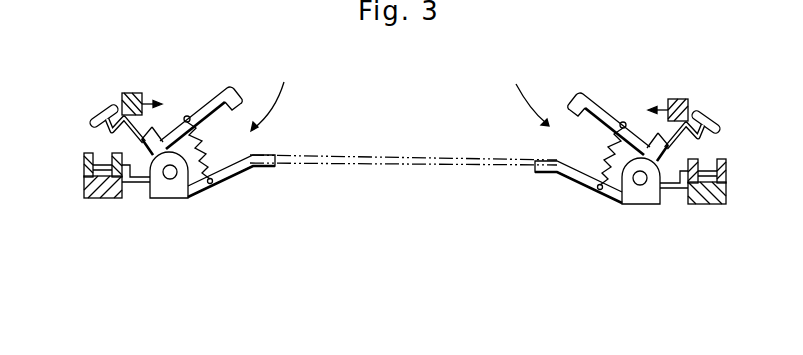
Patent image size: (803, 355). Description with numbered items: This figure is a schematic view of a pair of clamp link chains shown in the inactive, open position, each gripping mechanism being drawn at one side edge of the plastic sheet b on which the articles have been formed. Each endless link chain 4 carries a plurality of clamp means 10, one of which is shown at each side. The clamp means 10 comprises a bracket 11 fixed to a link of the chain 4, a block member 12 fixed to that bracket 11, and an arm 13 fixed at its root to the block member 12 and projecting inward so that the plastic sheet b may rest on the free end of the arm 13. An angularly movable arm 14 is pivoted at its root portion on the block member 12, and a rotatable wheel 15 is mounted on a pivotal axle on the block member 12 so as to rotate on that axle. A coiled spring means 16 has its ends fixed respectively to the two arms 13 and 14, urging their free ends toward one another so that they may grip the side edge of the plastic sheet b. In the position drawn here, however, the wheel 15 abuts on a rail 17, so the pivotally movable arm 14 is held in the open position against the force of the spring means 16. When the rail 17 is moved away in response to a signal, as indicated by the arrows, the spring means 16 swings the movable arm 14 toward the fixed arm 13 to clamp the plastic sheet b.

The endless link chain 4 is at (100, 184).
The clamp means 10 is at (400, 94).
The bracket 11 is at (131, 184).
The block member 12 is at (175, 193).
The arm 13 is at (231, 173).
The angularly movable arm 14 is at (205, 105).
The rotatable wheel 15 is at (95, 118).
The coiled spring means 16 is at (218, 150).
The rail 17 is at (134, 93).
The plastic sheet b is at (415, 220).